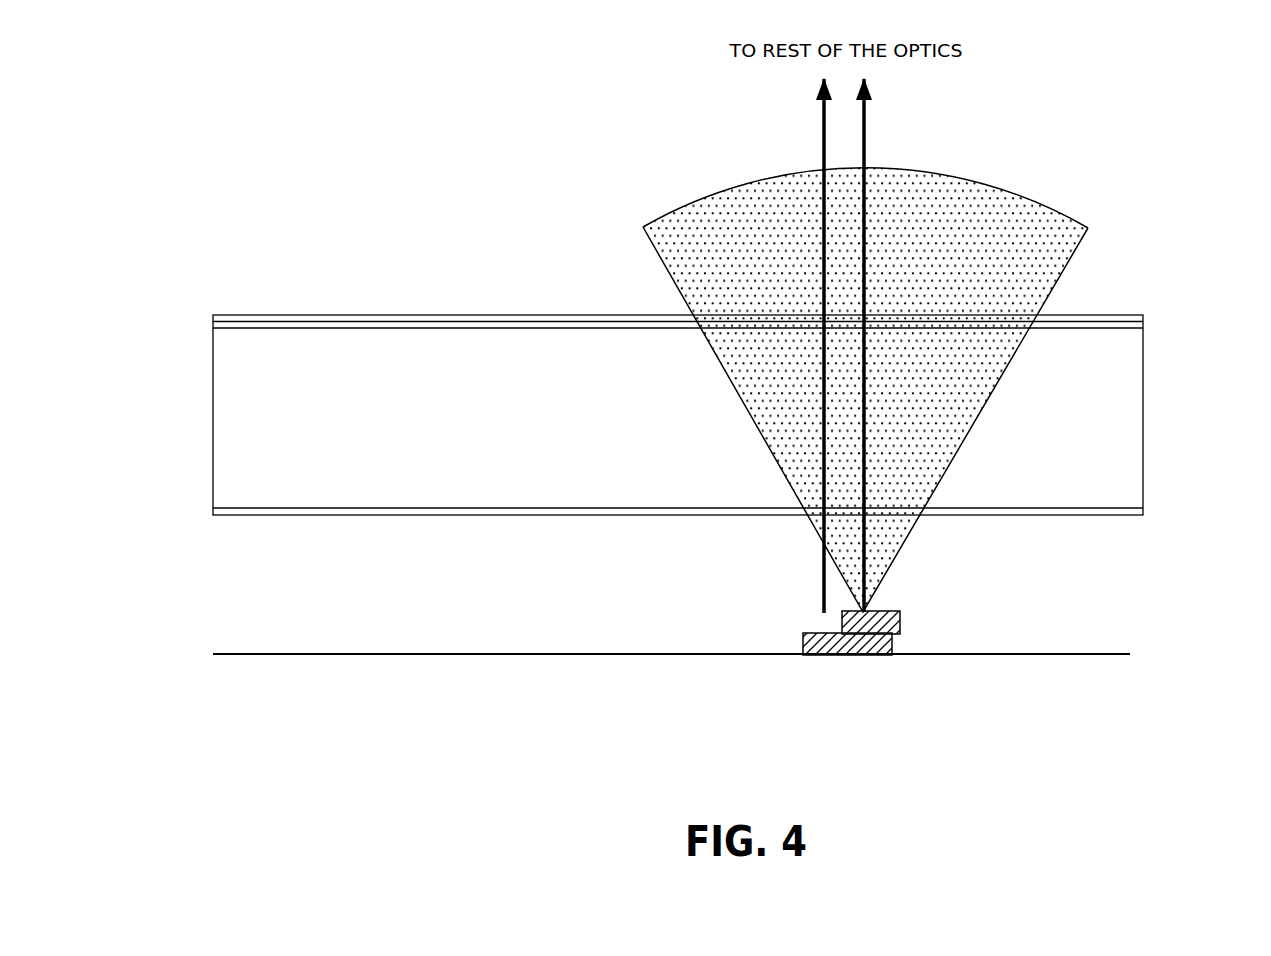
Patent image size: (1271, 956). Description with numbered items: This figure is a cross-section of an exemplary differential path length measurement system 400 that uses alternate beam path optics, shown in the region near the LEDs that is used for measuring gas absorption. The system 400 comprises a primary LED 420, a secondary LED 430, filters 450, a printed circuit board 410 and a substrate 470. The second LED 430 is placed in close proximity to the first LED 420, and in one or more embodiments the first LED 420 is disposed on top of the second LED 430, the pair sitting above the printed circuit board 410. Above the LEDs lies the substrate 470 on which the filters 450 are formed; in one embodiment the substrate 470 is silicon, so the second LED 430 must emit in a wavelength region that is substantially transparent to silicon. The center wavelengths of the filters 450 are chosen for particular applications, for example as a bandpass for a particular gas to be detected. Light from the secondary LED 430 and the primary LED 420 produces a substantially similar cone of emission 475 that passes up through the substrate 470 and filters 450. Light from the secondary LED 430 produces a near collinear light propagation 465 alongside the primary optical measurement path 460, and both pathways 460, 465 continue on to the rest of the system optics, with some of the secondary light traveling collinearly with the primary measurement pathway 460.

The differential path length measurement system 400 is at (438, 747).
The printed circuit board 410 is at (380, 660).
The primary LED 420 is at (904, 617).
The secondary LED 430 is at (800, 636).
The filters 450 is at (611, 507).
The primary optical measurement path 460 is at (883, 200).
The near collinear light propagation 465 is at (814, 157).
The substrate 470 is at (1147, 377).
The cone of emission 475 is at (1080, 219).